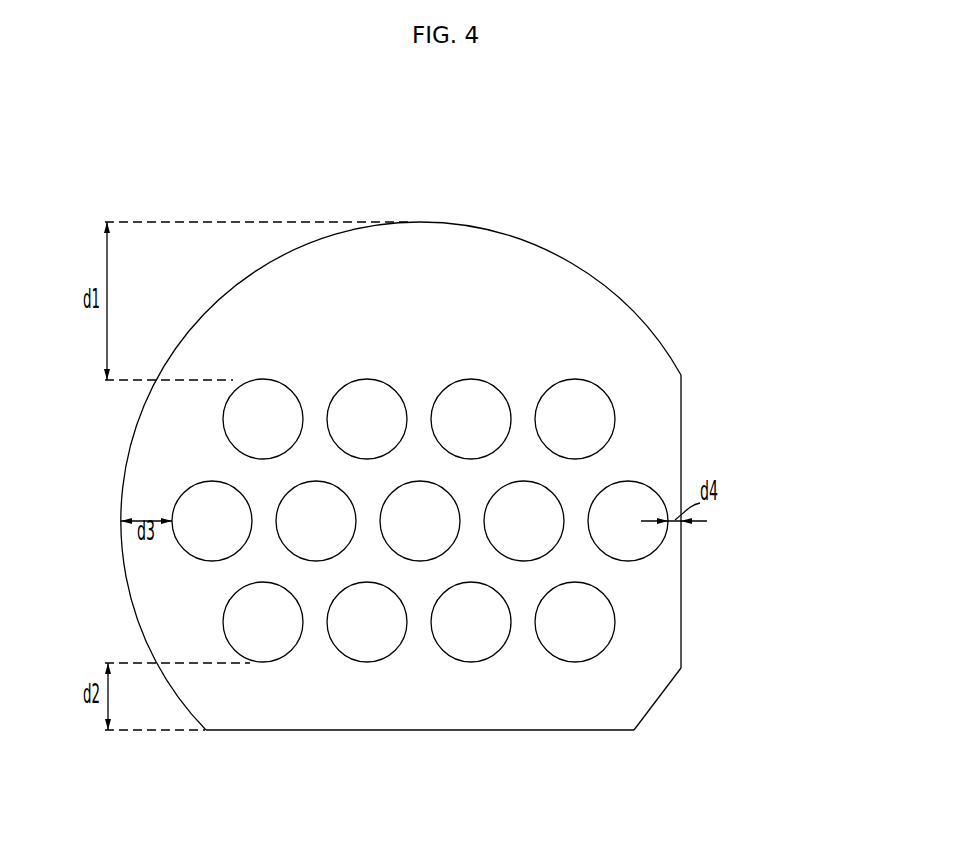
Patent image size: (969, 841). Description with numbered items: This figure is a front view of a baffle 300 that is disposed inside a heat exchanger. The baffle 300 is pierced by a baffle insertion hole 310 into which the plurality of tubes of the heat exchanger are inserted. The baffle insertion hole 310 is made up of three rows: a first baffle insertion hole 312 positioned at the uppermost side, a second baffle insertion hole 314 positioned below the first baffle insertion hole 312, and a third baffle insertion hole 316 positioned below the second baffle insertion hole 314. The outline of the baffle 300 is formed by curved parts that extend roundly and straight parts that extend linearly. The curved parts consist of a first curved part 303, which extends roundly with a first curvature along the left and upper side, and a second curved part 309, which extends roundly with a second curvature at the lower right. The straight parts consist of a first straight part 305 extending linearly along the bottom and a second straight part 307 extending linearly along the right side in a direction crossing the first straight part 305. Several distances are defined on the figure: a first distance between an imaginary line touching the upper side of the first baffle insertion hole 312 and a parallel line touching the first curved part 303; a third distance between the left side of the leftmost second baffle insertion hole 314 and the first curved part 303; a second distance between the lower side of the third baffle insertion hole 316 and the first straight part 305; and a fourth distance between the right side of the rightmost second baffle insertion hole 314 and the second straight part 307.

The baffle 300 is at (573, 178).
The first curved part 303 is at (132, 437).
The first straight part 305 is at (472, 732).
The second straight part 307 is at (682, 643).
The second curved part 309 is at (662, 698).
The baffle insertion hole 310 is at (794, 440).
The first baffle insertion hole 312 is at (615, 418).
The second baffle insertion hole 314 is at (660, 544).
The third baffle insertion hole 316 is at (615, 623).